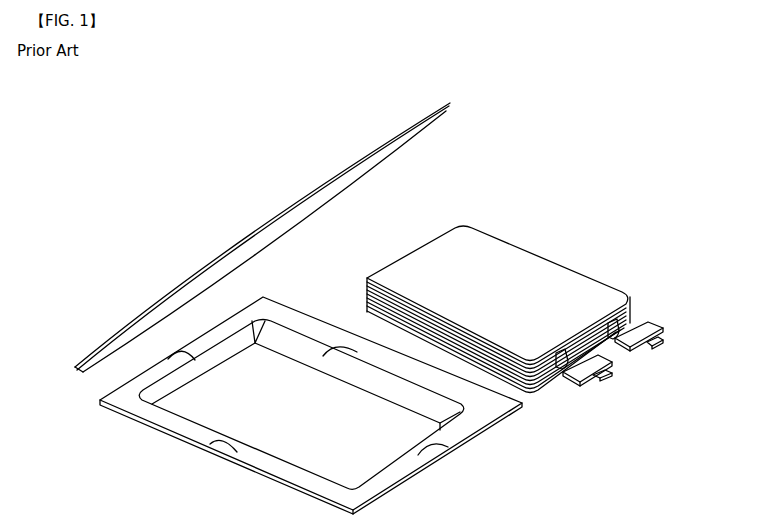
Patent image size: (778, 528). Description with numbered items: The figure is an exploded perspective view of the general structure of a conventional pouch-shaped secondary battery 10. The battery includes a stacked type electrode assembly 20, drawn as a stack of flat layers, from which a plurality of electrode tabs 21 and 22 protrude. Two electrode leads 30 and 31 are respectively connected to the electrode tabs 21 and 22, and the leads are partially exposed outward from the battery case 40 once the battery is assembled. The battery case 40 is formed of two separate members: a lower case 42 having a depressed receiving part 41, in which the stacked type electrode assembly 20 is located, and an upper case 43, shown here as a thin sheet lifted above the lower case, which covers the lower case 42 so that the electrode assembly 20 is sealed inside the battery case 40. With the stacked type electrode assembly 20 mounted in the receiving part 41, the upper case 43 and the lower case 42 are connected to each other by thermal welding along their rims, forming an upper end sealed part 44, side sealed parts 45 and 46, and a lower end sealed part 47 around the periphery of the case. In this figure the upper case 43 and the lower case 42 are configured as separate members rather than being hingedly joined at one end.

The pouch-shaped secondary battery 10 is at (55, 92).
The stacked type electrode assembly 20 is at (557, 247).
The electrode tab 21 is at (617, 318).
The electrode tab 22 is at (557, 353).
The electrode lead 30 is at (663, 345).
The electrode lead 31 is at (612, 377).
The battery case 40 is at (70, 478).
The depressed receiving part 41 is at (310, 420).
The lower case 42 is at (128, 415).
The upper case 43 is at (73, 368).
The upper end sealed part 44 is at (448, 447).
The side sealed part 45 is at (323, 356).
The side sealed part 46 is at (210, 444).
The lower end sealed part 47 is at (195, 360).